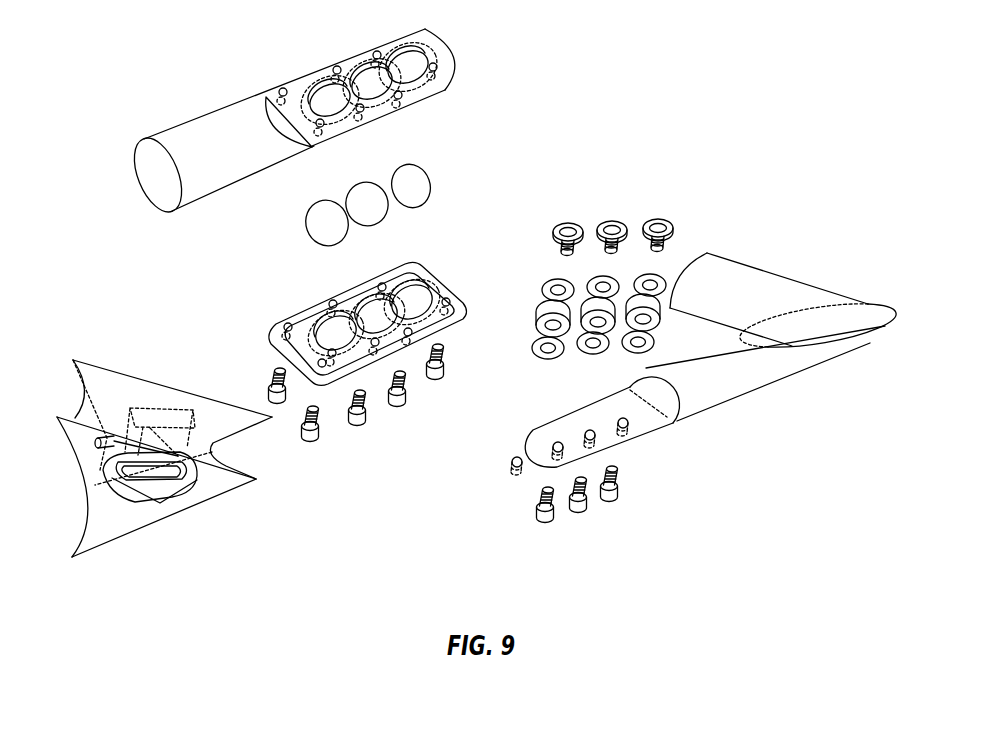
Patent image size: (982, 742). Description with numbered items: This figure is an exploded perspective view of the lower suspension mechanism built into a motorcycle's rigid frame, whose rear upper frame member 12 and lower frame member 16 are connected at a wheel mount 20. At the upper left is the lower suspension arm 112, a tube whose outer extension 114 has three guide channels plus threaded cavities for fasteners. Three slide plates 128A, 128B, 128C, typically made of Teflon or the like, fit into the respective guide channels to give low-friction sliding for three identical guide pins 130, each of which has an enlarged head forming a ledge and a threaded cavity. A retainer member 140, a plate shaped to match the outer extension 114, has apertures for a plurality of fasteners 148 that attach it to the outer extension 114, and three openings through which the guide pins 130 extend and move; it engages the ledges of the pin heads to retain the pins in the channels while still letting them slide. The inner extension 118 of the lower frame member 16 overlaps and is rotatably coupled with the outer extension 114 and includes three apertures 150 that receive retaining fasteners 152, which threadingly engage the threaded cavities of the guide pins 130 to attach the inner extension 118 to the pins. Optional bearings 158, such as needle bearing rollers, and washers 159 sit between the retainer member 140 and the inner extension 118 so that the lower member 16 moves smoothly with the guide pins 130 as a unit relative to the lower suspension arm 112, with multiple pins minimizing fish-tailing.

The wheel mount 20 is at (806, 200).
The upper frame member 12 is at (765, 268).
The lower frame member 16 is at (698, 402).
The lower suspension arm 112 is at (190, 118).
The outer extension 114 is at (300, 76).
The inner extension 118 is at (667, 430).
The slide plate 128A is at (305, 228).
The slide plate 128B is at (387, 226).
The slide plate 128C is at (429, 174).
The guide pins 130 is at (596, 205).
The retainer member 140 is at (298, 313).
The fasteners 148 is at (308, 442).
The apertures 150 is at (628, 447).
The retaining fasteners 152 is at (542, 527).
The bearings 158 is at (530, 300).
The washers 159 is at (538, 282).